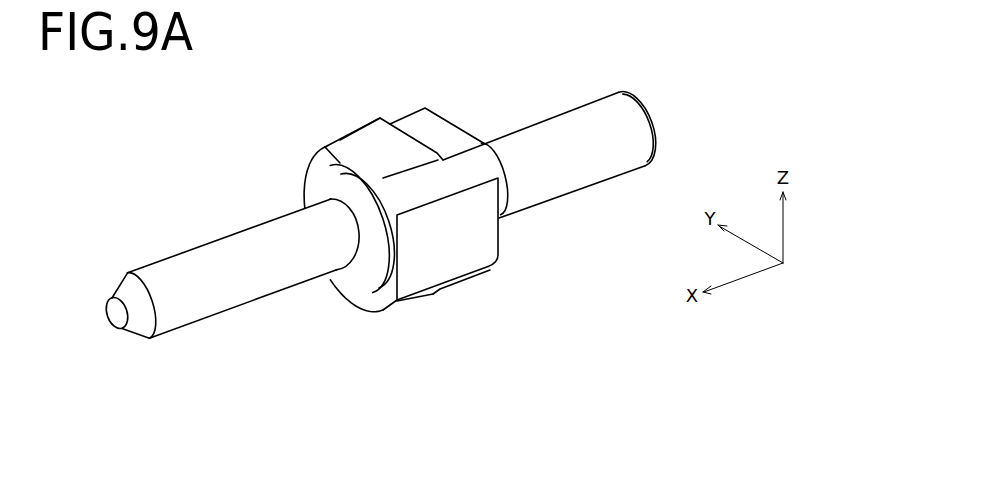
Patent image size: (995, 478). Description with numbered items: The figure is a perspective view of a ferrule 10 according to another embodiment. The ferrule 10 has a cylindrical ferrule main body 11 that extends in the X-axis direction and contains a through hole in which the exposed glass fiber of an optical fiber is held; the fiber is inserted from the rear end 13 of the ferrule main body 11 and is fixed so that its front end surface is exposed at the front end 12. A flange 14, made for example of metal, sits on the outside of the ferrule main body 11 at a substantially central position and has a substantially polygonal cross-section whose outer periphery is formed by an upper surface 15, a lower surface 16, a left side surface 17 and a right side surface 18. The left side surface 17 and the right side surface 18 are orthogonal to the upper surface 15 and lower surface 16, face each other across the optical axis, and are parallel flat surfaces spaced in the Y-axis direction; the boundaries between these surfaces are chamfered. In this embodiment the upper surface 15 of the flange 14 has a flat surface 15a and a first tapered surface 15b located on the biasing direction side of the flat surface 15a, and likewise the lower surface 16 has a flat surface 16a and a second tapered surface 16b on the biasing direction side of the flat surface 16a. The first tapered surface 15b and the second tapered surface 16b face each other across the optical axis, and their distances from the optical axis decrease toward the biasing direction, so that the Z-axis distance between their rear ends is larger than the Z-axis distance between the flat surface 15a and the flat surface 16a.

The ferrule 10 is at (292, 108).
The ferrule main body 11 is at (260, 302).
The front end 12 is at (117, 317).
The rear end 13 is at (636, 132).
The flange 14 is at (500, 293).
The upper surface 15 is at (335, 78).
The flat surface 15a is at (413, 113).
The first tapered surface 15b is at (366, 122).
The lower surface 16 is at (493, 334).
The flat surface 16a is at (460, 291).
The second tapered surface 16b is at (405, 306).
The left side surface 17 is at (308, 159).
The right side surface 18 is at (483, 240).